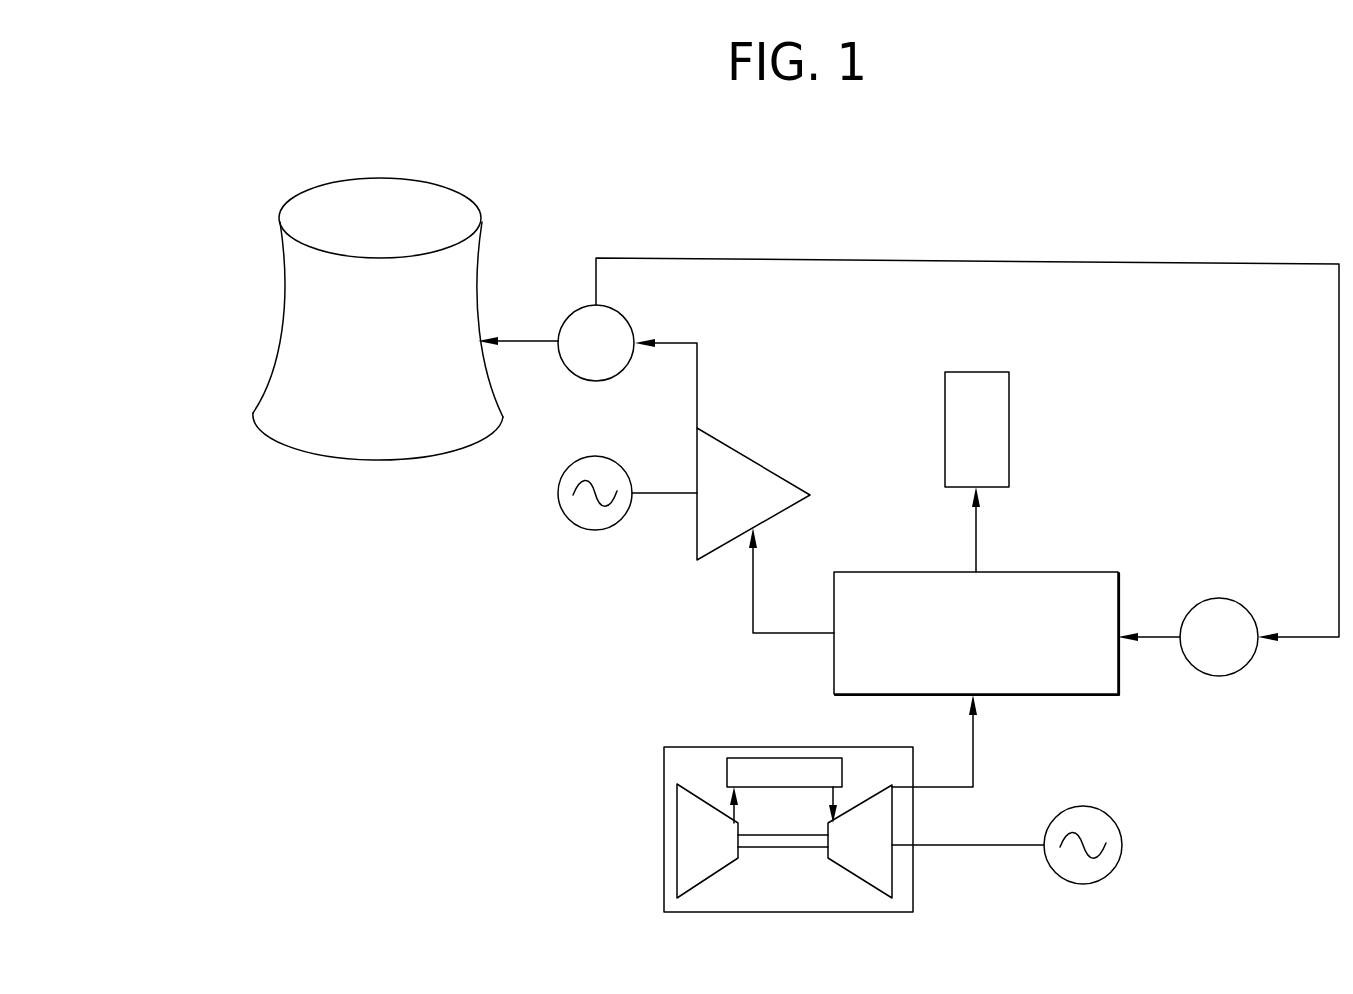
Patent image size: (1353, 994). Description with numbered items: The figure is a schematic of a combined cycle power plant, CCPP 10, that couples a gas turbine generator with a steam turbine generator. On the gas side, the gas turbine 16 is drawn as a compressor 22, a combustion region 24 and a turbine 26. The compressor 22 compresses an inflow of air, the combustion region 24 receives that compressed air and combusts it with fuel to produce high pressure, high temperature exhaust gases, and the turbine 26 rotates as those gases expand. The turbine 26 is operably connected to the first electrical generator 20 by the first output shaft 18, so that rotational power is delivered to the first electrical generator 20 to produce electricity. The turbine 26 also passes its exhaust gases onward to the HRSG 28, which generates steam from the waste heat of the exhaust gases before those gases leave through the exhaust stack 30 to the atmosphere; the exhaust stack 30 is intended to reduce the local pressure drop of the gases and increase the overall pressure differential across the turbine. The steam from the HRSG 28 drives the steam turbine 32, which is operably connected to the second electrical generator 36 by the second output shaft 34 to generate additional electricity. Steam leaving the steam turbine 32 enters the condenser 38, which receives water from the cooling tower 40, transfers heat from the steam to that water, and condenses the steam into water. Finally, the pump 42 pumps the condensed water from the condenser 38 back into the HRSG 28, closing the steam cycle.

The CCPP 10 is at (198, 288).
The gas turbine 16 is at (699, 747).
The first output shaft 18 is at (965, 846).
The first electrical generator 20 is at (1083, 806).
The compressor 22 is at (677, 840).
The combustion region 24 is at (752, 759).
The turbine 26 is at (874, 798).
The HRSG 28 is at (1098, 572).
The exhaust stack 30 is at (1009, 372).
The steam turbine 32 is at (756, 462).
The second output shaft 34 is at (661, 492).
The second electrical generator 36 is at (595, 456).
The condenser 38 is at (581, 307).
The cooling tower 40 is at (281, 212).
The pump 42 is at (1221, 599).